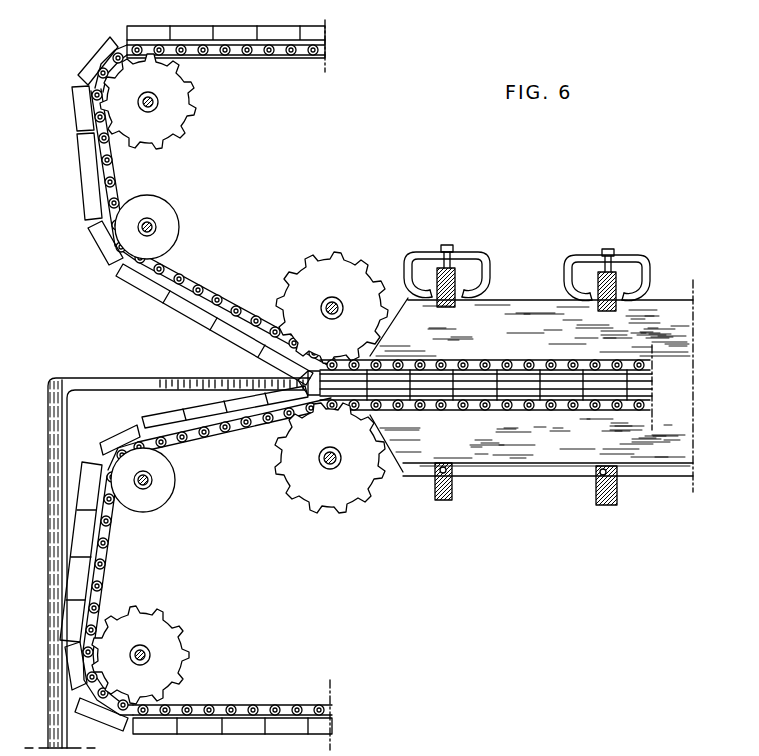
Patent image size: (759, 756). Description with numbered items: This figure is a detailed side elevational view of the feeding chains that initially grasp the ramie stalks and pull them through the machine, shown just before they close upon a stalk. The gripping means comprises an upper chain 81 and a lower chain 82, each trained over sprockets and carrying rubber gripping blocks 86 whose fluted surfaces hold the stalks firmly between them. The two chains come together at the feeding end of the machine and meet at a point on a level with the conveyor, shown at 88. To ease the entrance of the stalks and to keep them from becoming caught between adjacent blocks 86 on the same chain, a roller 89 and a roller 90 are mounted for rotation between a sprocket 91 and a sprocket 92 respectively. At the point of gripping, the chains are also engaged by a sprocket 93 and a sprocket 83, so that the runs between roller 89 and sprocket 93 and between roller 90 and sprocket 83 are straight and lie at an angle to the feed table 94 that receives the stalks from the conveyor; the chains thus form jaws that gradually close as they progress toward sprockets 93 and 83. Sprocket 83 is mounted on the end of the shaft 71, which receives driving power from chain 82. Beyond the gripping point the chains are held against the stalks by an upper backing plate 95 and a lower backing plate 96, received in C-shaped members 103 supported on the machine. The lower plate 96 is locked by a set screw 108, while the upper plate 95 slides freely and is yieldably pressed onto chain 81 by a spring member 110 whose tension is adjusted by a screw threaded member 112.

The shaft 71 is at (342, 433).
The upper chain 81 is at (280, 62).
The lower chain 82 is at (247, 706).
The sprocket 83 is at (330, 474).
The gripping blocks 86 is at (76, 150).
The meeting point 88 is at (305, 376).
The roller 89 is at (176, 224).
The roller 90 is at (155, 502).
The sprocket 91 is at (183, 117).
The sprocket 92 is at (163, 618).
The sprocket 93 is at (322, 258).
The feed table 94 is at (93, 378).
The upper backing plate 95 is at (688, 314).
The lower backing plate 96 is at (680, 470).
The C-shaped members 103 is at (452, 487).
The set screw 108 is at (440, 472).
The spring member 110 is at (490, 282).
The screw threaded member 112 is at (447, 247).